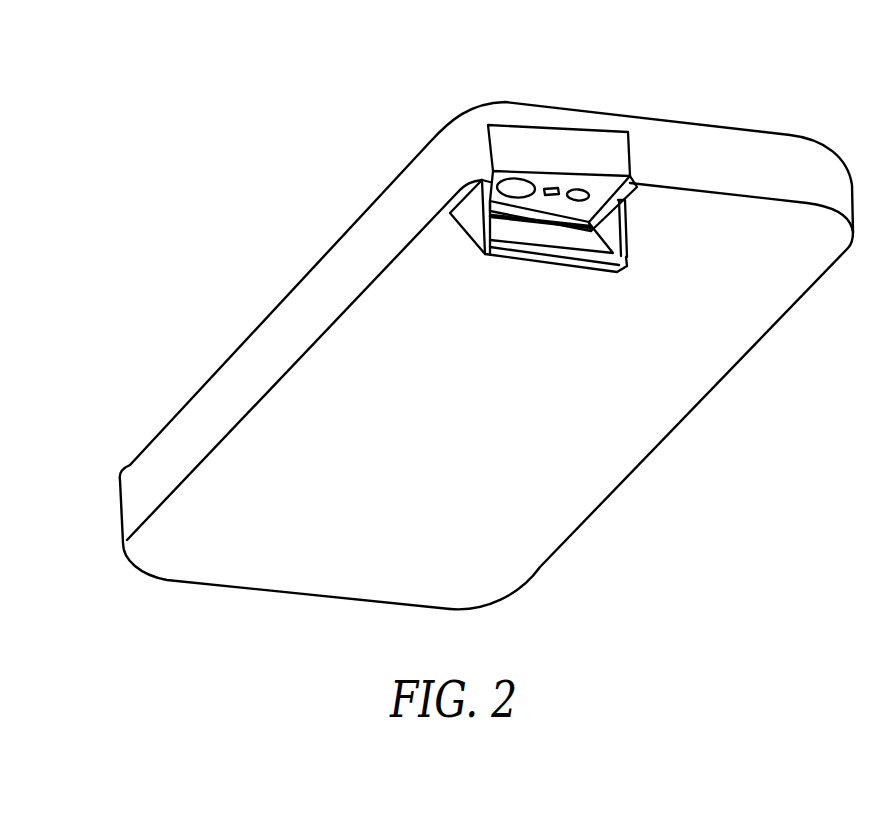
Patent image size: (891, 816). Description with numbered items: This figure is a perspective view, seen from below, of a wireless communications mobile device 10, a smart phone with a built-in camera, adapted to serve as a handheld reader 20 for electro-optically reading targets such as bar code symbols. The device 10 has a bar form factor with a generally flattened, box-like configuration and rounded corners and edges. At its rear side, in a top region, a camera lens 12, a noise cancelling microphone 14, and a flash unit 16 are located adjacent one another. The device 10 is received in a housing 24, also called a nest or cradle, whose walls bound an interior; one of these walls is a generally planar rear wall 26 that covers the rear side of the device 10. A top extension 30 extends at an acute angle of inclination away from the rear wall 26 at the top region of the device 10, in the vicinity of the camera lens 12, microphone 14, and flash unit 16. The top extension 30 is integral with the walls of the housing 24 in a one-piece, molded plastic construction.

The wireless communications mobile device 10 is at (582, 156).
The camera lens 12 is at (517, 179).
The noise cancelling microphone 14 is at (552, 187).
The flash unit 16 is at (581, 189).
The handheld reader 20 is at (482, 316).
The housing 24 is at (168, 584).
The rear wall 26 is at (630, 413).
The top extension 30 is at (473, 228).